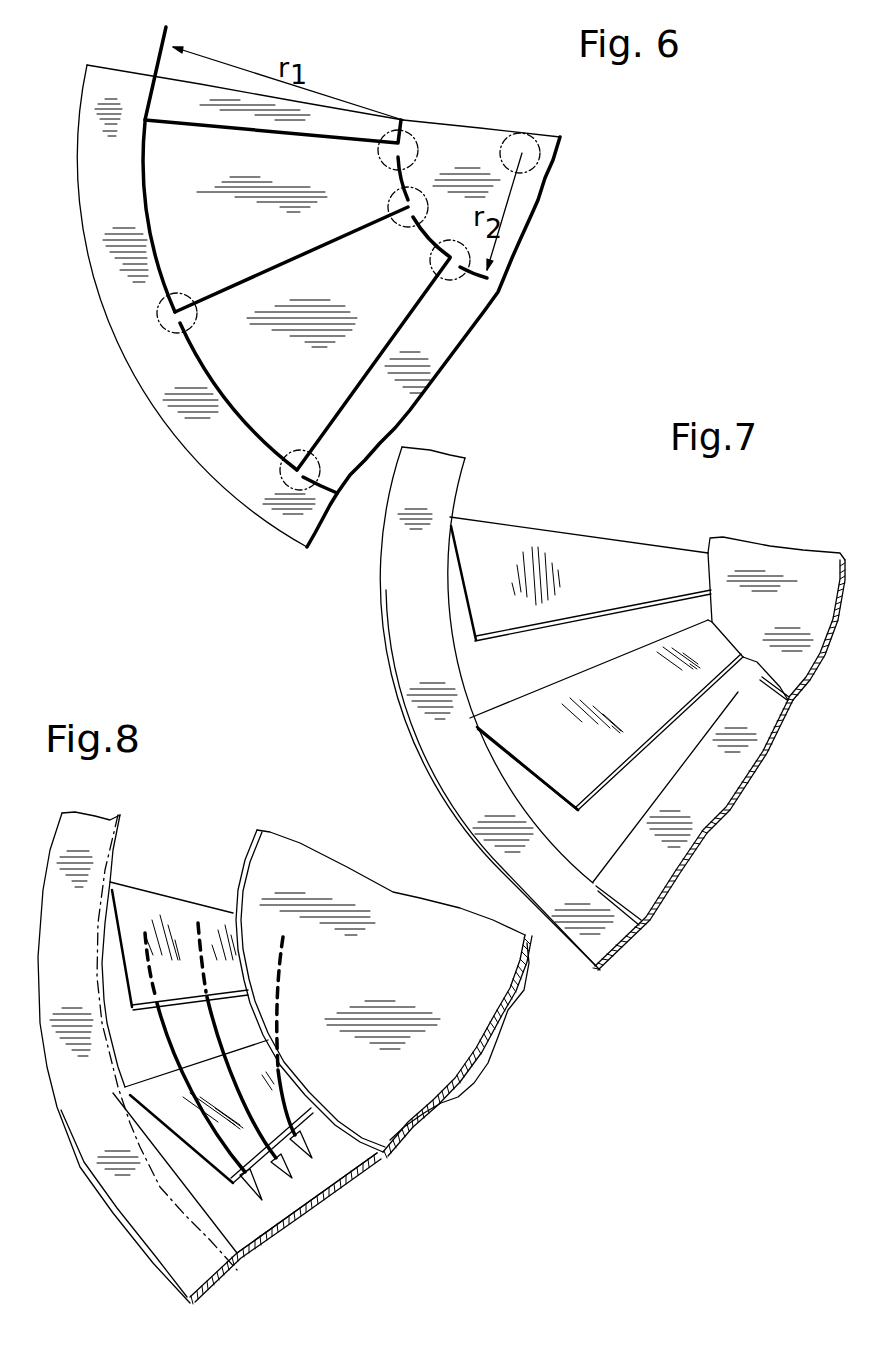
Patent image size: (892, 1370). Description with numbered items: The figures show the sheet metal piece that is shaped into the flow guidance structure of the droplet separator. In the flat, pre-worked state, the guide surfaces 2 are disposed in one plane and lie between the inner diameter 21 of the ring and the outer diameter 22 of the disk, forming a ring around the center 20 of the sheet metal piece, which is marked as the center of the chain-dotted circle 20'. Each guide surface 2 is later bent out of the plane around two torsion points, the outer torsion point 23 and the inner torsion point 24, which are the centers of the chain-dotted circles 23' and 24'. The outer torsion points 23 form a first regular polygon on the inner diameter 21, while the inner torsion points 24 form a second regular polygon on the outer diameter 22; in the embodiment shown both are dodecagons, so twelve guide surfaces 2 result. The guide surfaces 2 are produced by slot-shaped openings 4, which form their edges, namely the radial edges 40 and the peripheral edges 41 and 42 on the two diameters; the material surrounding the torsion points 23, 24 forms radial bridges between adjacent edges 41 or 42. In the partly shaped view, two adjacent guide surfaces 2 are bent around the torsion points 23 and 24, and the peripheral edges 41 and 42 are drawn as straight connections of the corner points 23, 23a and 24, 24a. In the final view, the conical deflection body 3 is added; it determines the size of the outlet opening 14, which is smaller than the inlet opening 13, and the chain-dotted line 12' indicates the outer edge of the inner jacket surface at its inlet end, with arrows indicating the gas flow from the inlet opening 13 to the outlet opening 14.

In FIG. 6, the guide surface 2 is at (265, 422).
In FIG. 7, the guide surface 2 is at (557, 557).
In FIG. 8, the guide surface 2 is at (167, 910).
In FIG. 8, the conical deflection body 3 is at (282, 848).
In FIG. 6, the slot-shaped opening 4 is at (262, 447).
In FIG. 8, the line 12' is at (167, 1036).
In FIG. 8, the inlet opening 13 is at (133, 1060).
In FIG. 8, the outlet opening 14 is at (323, 1142).
In FIG. 6, the center 20 is at (364, 133).
In FIG. 6, the circle 20' is at (503, 143).
In FIG. 6, the inner diameter of the ring 21 is at (160, 35).
In FIG. 7, the inner diameter of the ring 21 is at (458, 485).
In FIG. 6, the outer diameter of the disk 22 is at (503, 273).
In FIG. 7, the outer diameter of the disk 22 is at (708, 547).
In FIG. 6, the outer torsion point 23 is at (150, 366).
In FIG. 7, the outer torsion point 23 is at (533, 683).
In FIG. 6, the circle 23' is at (153, 399).
In FIG. 7, the corner point 23a is at (578, 810).
In FIG. 6, the inner torsion point 24 is at (324, 198).
In FIG. 7, the inner torsion point 24 is at (742, 581).
In FIG. 6, the circle 24' is at (480, 144).
In FIG. 7, the corner point 24a is at (788, 703).
In FIG. 6, the radial edge 40 is at (359, 393).
In FIG. 7, the radial edge 40 is at (633, 757).
In FIG. 6, the peripheral edge 41 is at (230, 400).
In FIG. 7, the peripheral edge 41 is at (547, 783).
In FIG. 6, the peripheral edge 42 is at (430, 237).
In FIG. 7, the peripheral edge 42 is at (738, 650).